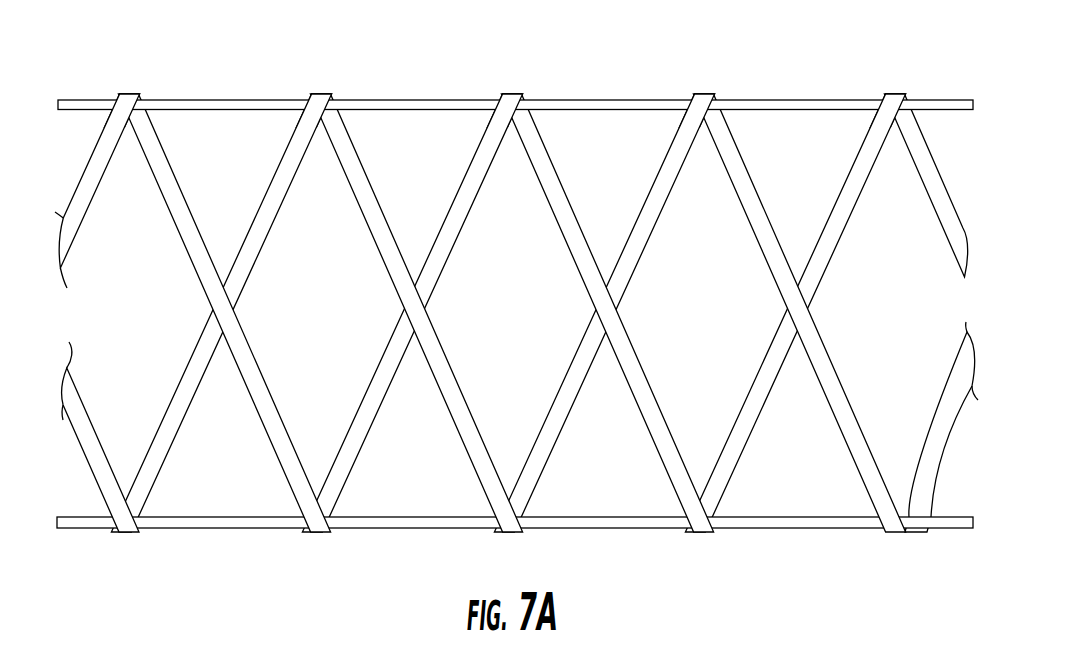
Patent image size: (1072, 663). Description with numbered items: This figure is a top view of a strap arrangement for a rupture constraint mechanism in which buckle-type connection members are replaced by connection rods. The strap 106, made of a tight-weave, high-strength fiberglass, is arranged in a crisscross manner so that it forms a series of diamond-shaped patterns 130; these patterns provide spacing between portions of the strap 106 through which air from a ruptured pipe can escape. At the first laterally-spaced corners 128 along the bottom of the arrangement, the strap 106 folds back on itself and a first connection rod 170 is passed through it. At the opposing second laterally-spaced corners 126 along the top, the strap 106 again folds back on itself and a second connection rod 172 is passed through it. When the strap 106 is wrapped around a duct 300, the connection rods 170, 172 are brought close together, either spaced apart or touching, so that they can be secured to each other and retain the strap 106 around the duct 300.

The strap 106 is at (948, 218).
The second laterally-spaced corner 126 is at (892, 95).
The first laterally-spaced corner 128 is at (703, 532).
The diamond-shaped pattern 130 is at (672, 137).
The first connection rod 170 is at (843, 528).
The second connection rod 172 is at (850, 107).
The duct 300 is at (553, 336).